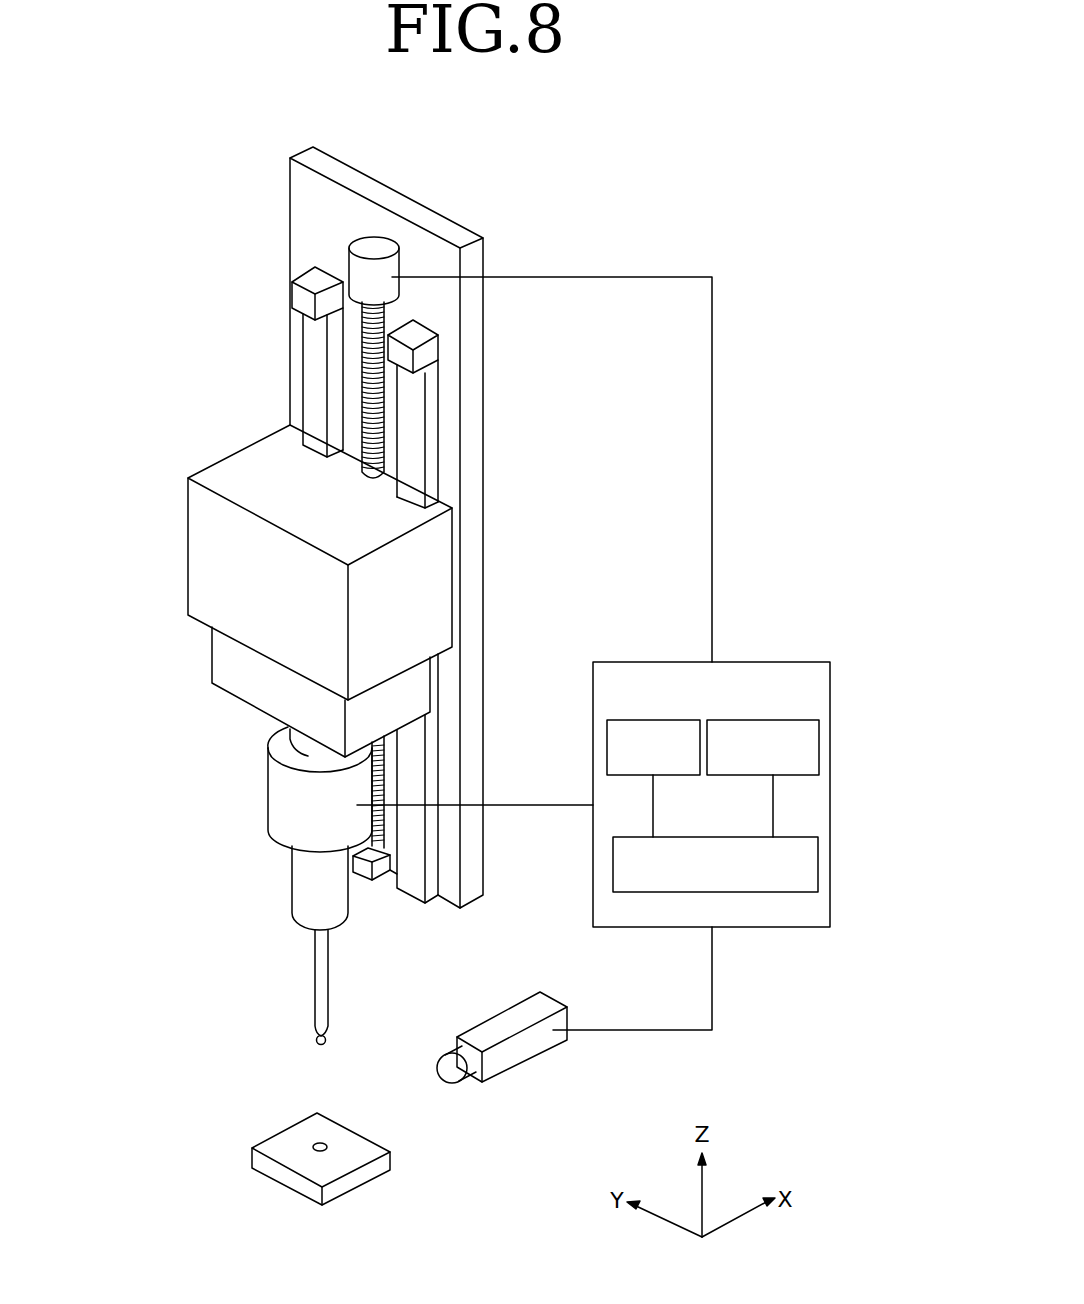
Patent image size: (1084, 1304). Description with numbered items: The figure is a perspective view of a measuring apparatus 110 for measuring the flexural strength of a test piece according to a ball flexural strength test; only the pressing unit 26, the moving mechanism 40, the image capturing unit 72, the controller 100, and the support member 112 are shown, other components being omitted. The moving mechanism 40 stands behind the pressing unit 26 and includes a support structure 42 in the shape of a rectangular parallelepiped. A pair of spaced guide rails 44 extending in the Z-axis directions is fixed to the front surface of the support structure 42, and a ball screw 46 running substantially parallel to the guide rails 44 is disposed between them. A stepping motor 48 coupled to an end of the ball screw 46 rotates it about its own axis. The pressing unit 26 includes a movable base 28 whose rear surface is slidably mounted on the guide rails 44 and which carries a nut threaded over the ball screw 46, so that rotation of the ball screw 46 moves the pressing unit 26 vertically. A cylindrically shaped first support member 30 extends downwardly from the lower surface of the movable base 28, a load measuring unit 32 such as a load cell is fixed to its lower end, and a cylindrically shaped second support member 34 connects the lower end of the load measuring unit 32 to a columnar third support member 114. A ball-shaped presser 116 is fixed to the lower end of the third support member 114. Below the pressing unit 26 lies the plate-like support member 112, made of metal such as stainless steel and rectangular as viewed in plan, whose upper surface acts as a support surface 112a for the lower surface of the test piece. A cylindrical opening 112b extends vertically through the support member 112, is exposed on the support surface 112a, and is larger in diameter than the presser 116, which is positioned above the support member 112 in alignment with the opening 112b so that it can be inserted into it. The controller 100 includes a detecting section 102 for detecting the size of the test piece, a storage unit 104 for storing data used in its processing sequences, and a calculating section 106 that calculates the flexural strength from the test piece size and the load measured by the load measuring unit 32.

The measuring apparatus 110 is at (182, 212).
The moving mechanism 40 is at (448, 197).
The support structure 42 is at (480, 455).
The guide rails 44 is at (317, 282).
The ball screw 46 is at (363, 388).
The stepping motor 48 is at (372, 238).
The pressing unit 26 is at (203, 455).
The movable base 28 is at (237, 573).
The first support member 30 is at (303, 744).
The load measuring unit 32 is at (295, 812).
The second support member 34 is at (318, 877).
The third support member 114 is at (317, 960).
The presser 116 is at (316, 1042).
The support member 112 is at (228, 1157).
The support surface 112a is at (350, 1157).
The opening 112b is at (318, 1142).
The image capturing unit 72 is at (485, 1032).
The controller 100 is at (772, 662).
The detecting section 102 is at (607, 747).
The storage unit 104 is at (820, 878).
The calculating section 106 is at (820, 750).